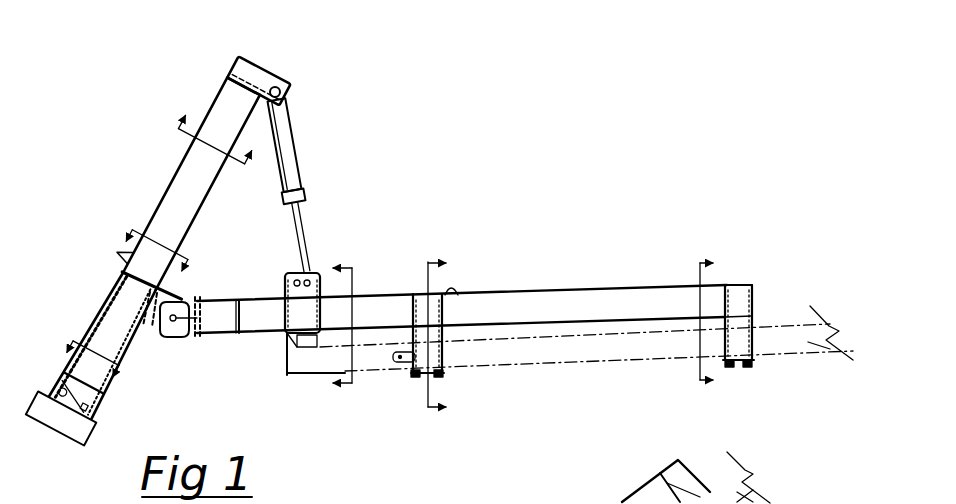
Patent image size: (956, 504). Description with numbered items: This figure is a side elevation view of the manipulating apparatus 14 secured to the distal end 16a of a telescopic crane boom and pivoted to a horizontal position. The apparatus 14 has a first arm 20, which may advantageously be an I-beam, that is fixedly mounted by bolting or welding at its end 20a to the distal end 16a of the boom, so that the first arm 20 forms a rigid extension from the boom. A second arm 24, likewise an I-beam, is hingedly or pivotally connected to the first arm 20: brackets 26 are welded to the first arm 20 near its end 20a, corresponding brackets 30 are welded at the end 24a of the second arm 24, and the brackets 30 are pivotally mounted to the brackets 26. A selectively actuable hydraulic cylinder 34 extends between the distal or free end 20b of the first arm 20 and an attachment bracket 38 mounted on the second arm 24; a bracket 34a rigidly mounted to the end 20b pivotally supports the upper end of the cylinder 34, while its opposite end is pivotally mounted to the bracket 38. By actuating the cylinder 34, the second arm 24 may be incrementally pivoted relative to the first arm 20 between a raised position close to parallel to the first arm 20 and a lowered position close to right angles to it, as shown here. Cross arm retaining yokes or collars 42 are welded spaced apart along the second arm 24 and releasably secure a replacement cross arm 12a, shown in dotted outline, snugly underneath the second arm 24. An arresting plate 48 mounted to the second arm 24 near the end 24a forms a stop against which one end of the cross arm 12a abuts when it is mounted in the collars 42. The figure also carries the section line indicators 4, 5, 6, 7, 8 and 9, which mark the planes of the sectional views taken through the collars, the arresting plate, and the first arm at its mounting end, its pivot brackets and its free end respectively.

The replacement cross arm 12a is at (815, 353).
The manipulating apparatus 14 is at (408, 200).
The distal end of telescopic boom 16a is at (58, 431).
The first arm 20 is at (182, 167).
The end of first arm 20a is at (104, 416).
The distal end of first arm 20b is at (233, 87).
The second arm 24 is at (583, 297).
The end of second arm 24a is at (213, 313).
The brackets 26 is at (157, 345).
The brackets 30 is at (198, 339).
The hydraulic cylinder 34 is at (287, 123).
The bracket 34a is at (278, 80).
The attachment bracket 38 is at (317, 273).
The cross arm retaining collar 42 is at (755, 370).
The arresting plate 48 is at (258, 333).
The section line 4- 4 is at (433, 339).
The section line 5- 5 is at (717, 324).
The section line 6- 6 is at (342, 328).
The section line 7- 7 is at (89, 378).
The section line 8- 8 is at (151, 250).
The section line 9- 9 is at (211, 147).